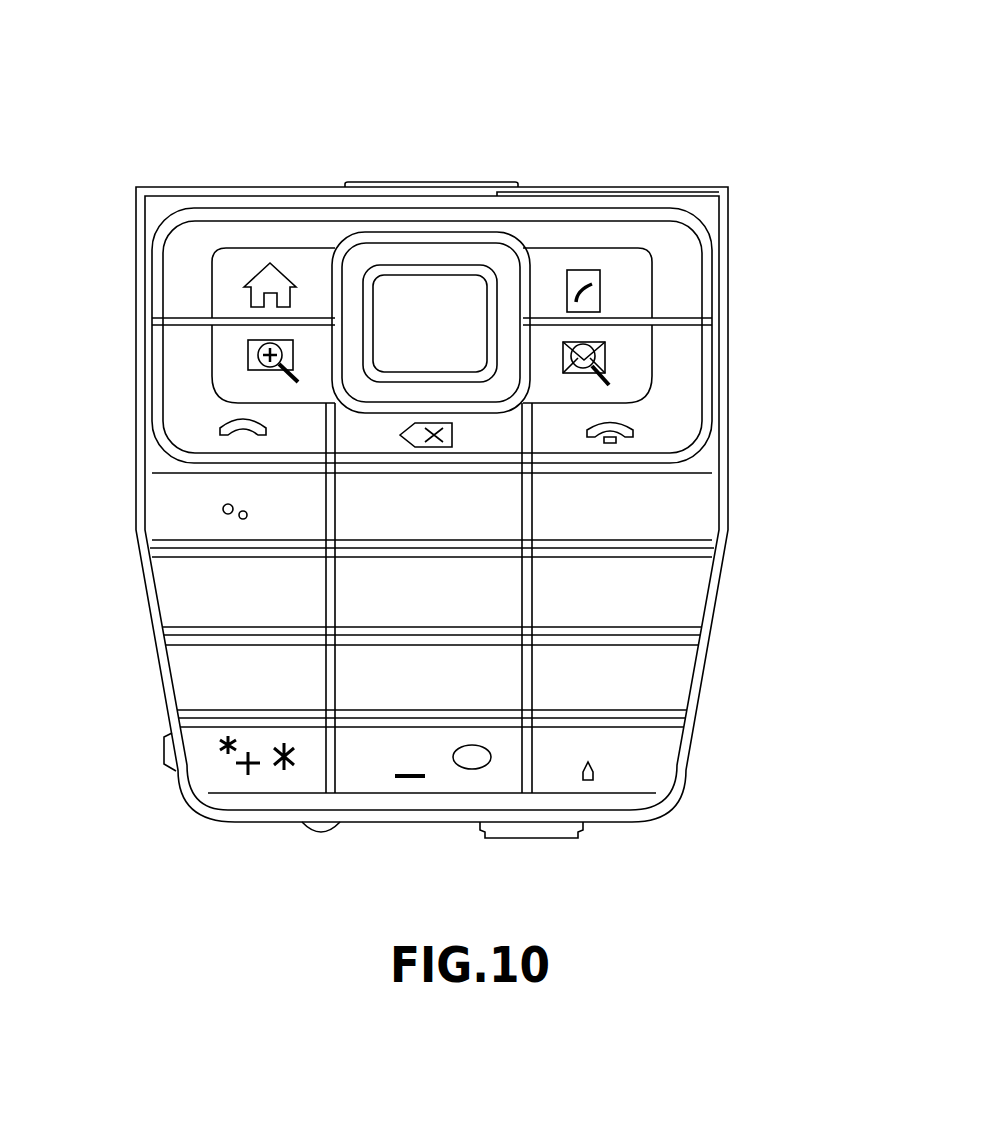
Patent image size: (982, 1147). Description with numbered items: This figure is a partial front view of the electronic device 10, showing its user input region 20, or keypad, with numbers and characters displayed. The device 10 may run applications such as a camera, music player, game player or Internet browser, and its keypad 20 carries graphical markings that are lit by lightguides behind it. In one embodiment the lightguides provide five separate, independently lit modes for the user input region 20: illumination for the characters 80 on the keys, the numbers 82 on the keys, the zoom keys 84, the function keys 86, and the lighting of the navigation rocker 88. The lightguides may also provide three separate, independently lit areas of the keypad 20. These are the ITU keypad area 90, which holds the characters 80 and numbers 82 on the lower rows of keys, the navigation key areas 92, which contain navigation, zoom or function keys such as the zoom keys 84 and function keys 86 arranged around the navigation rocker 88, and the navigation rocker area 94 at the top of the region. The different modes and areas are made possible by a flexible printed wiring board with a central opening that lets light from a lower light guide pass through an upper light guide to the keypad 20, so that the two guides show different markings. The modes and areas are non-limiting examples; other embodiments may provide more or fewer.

The device 10 is at (386, 419).
The user input region 20 is at (510, 505).
The characters 80 is at (207, 588).
The numbers 82 is at (237, 573).
The zoom keys 84 is at (176, 270).
The function keys 86 is at (257, 278).
The navigation rocker 88 is at (347, 237).
The ITU keypad area 90 is at (466, 643).
The navigation key areas 92 is at (466, 295).
The navigation rocker area 94 is at (518, 180).